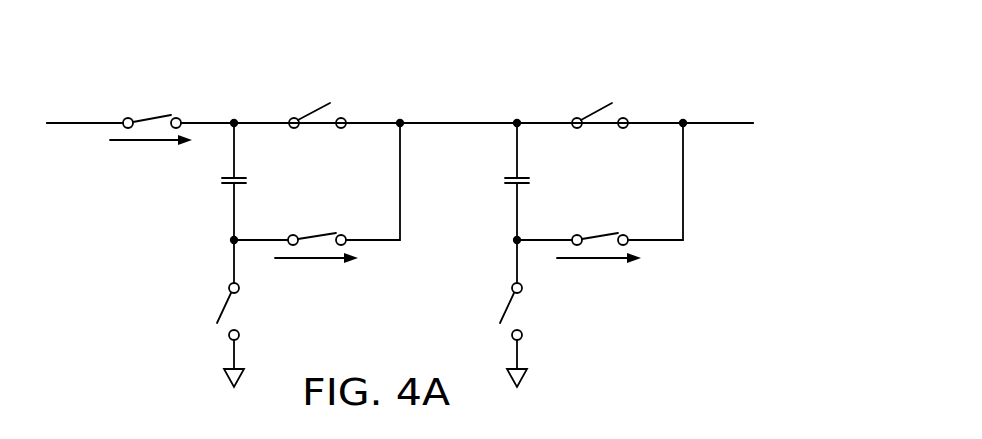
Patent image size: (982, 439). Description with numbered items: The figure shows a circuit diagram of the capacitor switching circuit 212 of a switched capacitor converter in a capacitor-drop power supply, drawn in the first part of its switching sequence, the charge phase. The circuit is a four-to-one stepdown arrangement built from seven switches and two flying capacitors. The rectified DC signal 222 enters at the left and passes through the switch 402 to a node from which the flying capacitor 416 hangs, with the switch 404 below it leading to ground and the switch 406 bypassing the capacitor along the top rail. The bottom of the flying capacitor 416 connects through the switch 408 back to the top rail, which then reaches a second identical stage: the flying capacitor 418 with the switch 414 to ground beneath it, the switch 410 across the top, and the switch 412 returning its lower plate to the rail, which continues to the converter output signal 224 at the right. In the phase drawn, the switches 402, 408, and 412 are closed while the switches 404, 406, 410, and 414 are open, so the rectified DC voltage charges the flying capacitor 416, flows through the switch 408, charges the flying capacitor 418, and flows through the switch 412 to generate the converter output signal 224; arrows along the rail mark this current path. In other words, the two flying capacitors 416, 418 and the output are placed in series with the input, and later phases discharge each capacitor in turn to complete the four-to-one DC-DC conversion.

The capacitor switching circuit 212 is at (470, 74).
The rectified DC signal 222 is at (82, 122).
The converter output signal 224 is at (718, 121).
The switch 402 is at (150, 118).
The switch 404 is at (224, 306).
The switch 406 is at (310, 112).
The switch 408 is at (318, 234).
The switch 410 is at (592, 110).
The switch 412 is at (601, 234).
The switch 414 is at (507, 306).
The flying capacitor 416 is at (222, 180).
The flying capacitor 418 is at (505, 180).